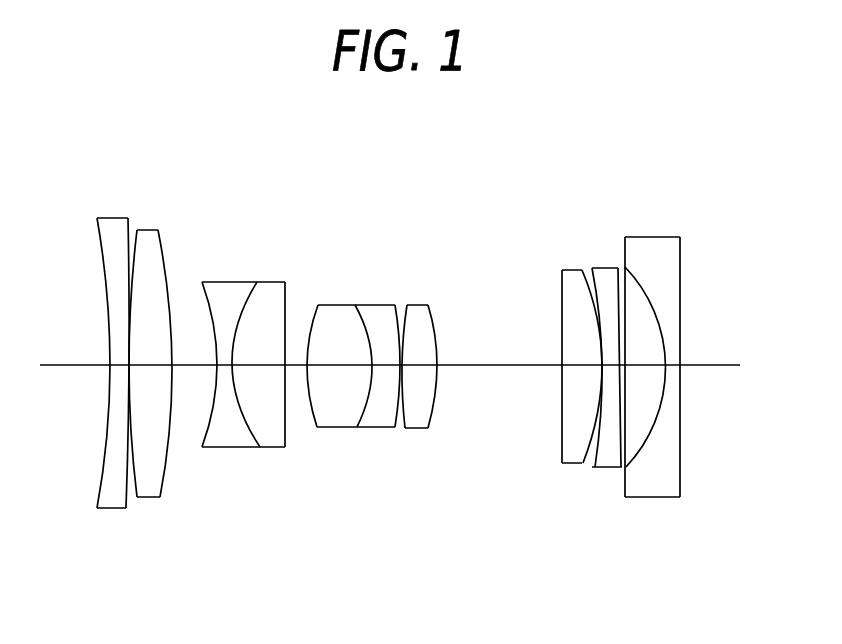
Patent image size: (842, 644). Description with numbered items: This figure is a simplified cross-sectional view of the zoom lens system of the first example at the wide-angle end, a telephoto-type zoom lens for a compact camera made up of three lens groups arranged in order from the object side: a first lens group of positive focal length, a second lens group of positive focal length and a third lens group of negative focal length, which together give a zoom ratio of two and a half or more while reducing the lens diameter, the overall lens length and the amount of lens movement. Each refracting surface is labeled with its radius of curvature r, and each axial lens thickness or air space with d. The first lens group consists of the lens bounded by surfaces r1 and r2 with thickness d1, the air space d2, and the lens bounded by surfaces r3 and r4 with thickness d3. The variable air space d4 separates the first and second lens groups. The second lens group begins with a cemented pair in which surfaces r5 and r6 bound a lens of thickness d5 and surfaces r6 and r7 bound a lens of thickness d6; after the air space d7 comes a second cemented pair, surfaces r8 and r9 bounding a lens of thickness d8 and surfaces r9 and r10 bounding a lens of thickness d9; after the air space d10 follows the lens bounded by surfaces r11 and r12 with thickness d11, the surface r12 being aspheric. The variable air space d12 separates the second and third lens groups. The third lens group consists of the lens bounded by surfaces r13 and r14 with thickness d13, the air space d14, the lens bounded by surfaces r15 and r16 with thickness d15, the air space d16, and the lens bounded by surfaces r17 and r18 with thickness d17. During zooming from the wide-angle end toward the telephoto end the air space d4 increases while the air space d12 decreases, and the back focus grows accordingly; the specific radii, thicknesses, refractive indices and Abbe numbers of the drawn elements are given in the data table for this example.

The first lens surface radius of curvature r1 is at (97, 218).
The second lens surface radius of curvature r2 is at (128, 218).
The third lens surface radius of curvature r3 is at (137, 230).
The fourth lens surface radius of curvature r4 is at (158, 230).
The fifth lens surface radius of curvature r5 is at (202, 282).
The sixth lens surface radius of curvature r6 is at (257, 282).
The seventh lens surface radius of curvature r7 is at (285, 282).
The eighth lens surface radius of curvature r8 is at (318, 305).
The ninth lens surface radius of curvature r9 is at (355, 305).
The tenth lens surface radius of curvature r10 is at (395, 305).
The eleventh lens surface radius of curvature r11 is at (407, 305).
The twelfth lens surface radius of curvature r12 is at (428, 305).
The thirteenth lens surface radius of curvature r13 is at (562, 270).
The fourteenth lens surface radius of curvature r14 is at (582, 270).
The fifteenth lens surface radius of curvature r15 is at (592, 268).
The sixteenth lens surface radius of curvature r16 is at (620, 267).
The seventeenth lens surface radius of curvature r17 is at (625, 266).
The eighteenth lens surface radius of curvature r18 is at (680, 237).
The first lens thickness d1 is at (118, 365).
The first air space d2 is at (129, 365).
The second lens thickness d3 is at (152, 365).
The variable air space between first and second lens groups d4 is at (193, 365).
The third lens thickness d5 is at (225, 365).
The fourth lens thickness d6 is at (260, 365).
The air space within second lens group d7 is at (297, 365).
The fifth lens thickness d8 is at (340, 365).
The sixth lens thickness d9 is at (385, 365).
The air space before aspheric lens d10 is at (401, 365).
The seventh lens thickness d11 is at (418, 365).
The variable air space between second and third lens groups d12 is at (499, 365).
The eighth lens thickness d13 is at (580, 365).
The air space within third lens group d14 is at (607, 365).
The ninth lens thickness d15 is at (620, 365).
The air space before last lens d16 is at (640, 365).
The tenth lens thickness d17 is at (673, 365).